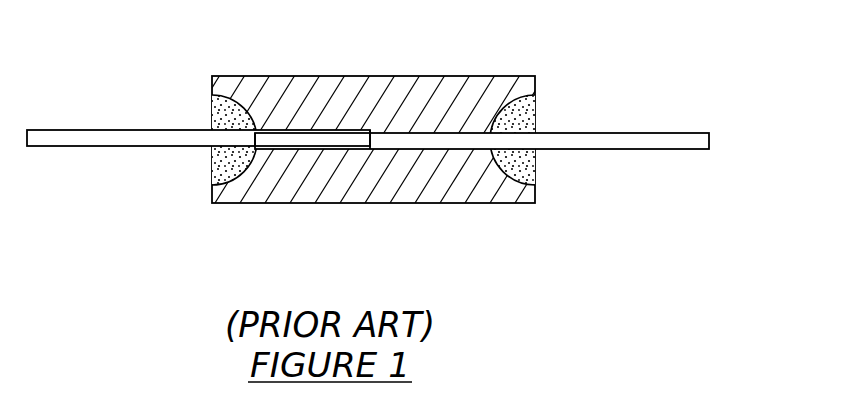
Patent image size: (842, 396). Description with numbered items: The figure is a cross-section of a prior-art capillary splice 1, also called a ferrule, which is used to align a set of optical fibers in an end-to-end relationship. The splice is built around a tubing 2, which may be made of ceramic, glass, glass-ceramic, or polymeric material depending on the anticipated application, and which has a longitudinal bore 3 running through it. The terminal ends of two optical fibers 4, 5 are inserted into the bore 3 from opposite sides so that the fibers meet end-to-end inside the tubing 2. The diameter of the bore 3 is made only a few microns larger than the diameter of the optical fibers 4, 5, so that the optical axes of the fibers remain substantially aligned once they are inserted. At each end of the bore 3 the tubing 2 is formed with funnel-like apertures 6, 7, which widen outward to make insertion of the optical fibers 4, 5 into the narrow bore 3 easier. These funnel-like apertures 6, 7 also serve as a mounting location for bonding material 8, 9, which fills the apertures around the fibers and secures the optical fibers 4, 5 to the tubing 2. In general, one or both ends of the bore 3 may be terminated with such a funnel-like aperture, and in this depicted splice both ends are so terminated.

The capillary splice 1 is at (368, 131).
The tubing 2 is at (370, 76).
The longitudinal bore 3 is at (372, 149).
The optical fiber 4 is at (90, 134).
The optical fiber 5 is at (652, 139).
The funnel-like aperture 6 is at (223, 185).
The funnel-like aperture 7 is at (527, 185).
The bonding material 8 is at (212, 103).
The bonding material 9 is at (535, 113).